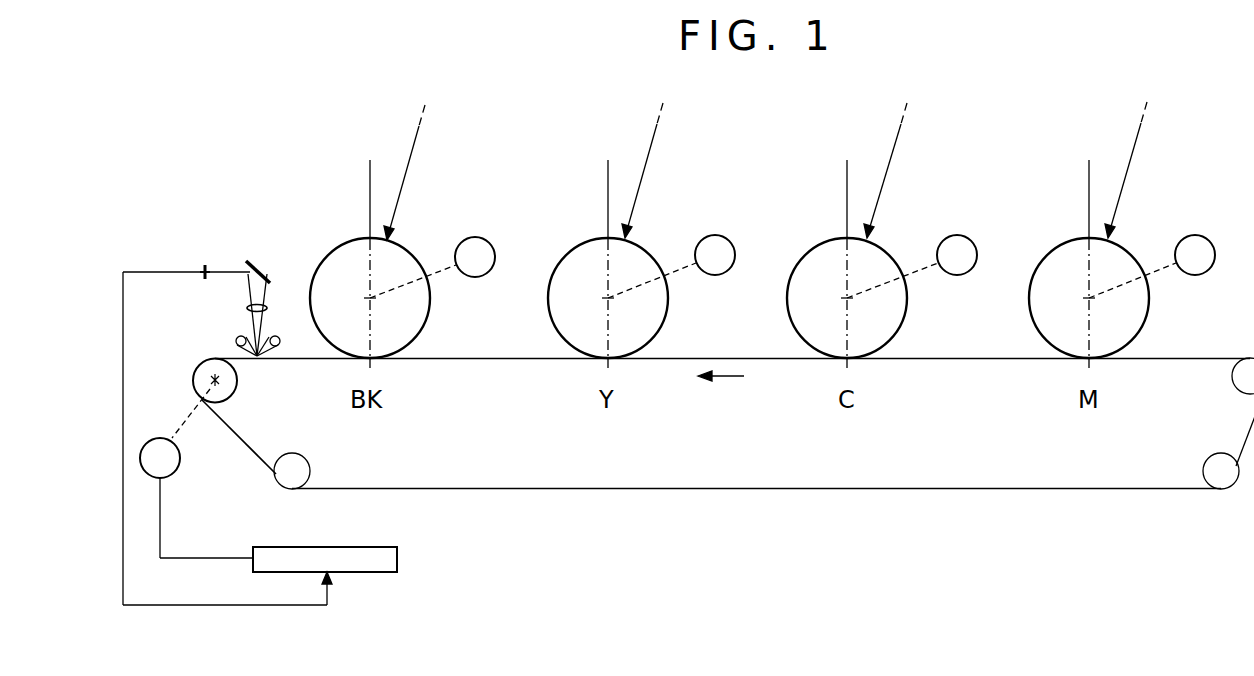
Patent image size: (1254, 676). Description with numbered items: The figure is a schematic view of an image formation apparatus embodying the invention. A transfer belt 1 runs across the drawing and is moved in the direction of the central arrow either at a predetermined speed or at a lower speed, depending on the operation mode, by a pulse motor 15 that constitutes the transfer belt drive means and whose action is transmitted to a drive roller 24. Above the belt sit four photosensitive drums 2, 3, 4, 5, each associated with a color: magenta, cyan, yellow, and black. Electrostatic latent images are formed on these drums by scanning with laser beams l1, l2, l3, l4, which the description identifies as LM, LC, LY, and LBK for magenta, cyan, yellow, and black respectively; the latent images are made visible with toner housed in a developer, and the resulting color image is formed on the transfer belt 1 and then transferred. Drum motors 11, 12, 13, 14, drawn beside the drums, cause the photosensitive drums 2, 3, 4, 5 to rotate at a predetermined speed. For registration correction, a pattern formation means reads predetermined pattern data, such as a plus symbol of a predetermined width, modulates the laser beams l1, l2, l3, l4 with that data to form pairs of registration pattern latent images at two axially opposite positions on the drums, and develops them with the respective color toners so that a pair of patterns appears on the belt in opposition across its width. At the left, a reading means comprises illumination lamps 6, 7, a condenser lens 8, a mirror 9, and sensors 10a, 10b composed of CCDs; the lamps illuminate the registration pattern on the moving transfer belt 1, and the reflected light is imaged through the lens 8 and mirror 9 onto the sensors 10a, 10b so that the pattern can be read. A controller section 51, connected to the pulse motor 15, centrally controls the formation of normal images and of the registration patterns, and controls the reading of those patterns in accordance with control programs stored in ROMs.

The transfer belt 1 is at (1040, 490).
The photosensitive drum 2 is at (1056, 250).
The photosensitive drum 3 is at (811, 251).
The photosensitive drum 4 is at (572, 251).
The photosensitive drum 5 is at (338, 251).
The illumination lamp 6 is at (235, 341).
The illumination lamp 7 is at (280, 337).
The condenser lens 8 is at (246, 308).
The mirror 9 is at (268, 259).
The sensor 10a is at (205, 265).
The sensor 10b is at (229, 221).
The drum motor 11 is at (1197, 276).
The drum motor 12 is at (959, 276).
The drum motor 13 is at (717, 276).
The drum motor 14 is at (477, 278).
The pulse motor 15 is at (178, 466).
The drive roller 24 is at (193, 382).
The controller section 51 is at (399, 558).
The laser beam LM l1 is at (1135, 160).
The laser beam LC l2 is at (893, 160).
The laser beam LY l3 is at (651, 158).
The laser beam LBK l4 is at (409, 158).